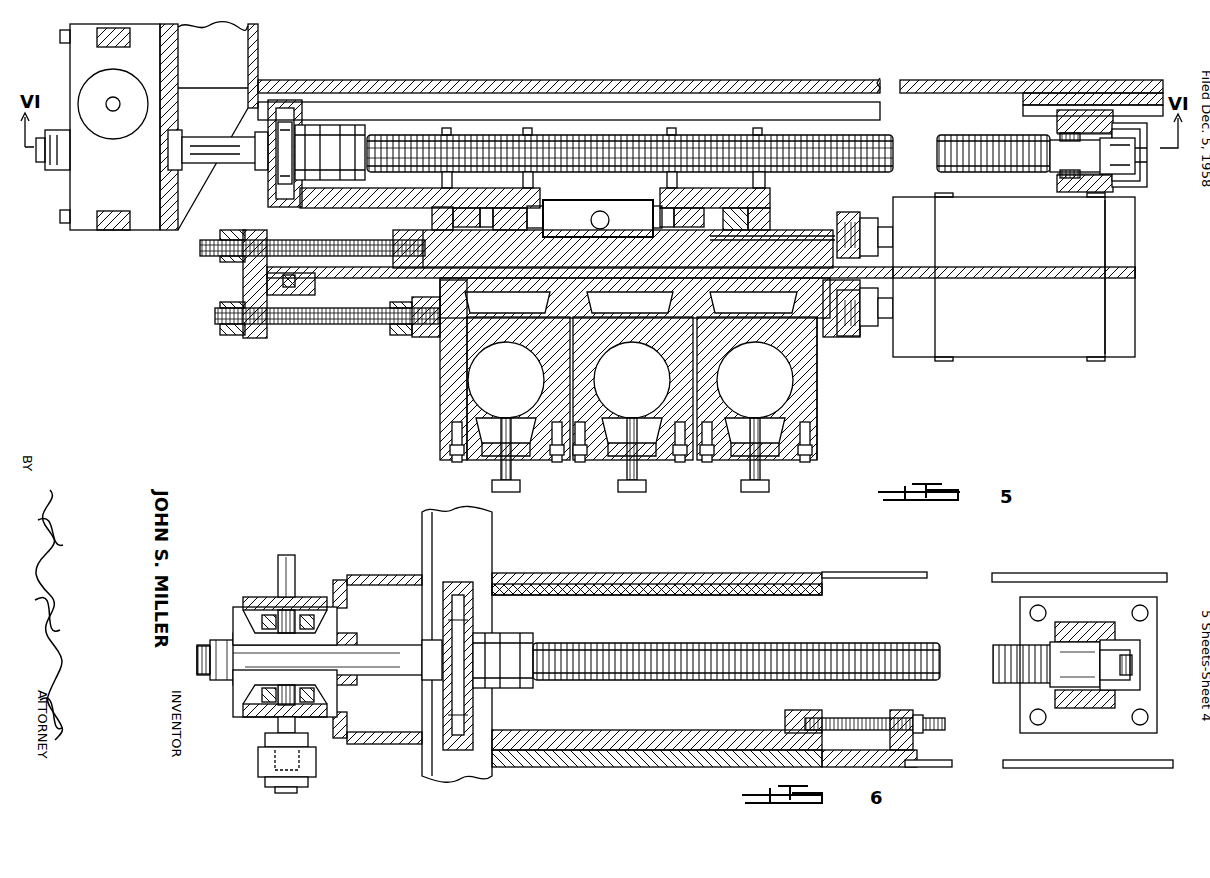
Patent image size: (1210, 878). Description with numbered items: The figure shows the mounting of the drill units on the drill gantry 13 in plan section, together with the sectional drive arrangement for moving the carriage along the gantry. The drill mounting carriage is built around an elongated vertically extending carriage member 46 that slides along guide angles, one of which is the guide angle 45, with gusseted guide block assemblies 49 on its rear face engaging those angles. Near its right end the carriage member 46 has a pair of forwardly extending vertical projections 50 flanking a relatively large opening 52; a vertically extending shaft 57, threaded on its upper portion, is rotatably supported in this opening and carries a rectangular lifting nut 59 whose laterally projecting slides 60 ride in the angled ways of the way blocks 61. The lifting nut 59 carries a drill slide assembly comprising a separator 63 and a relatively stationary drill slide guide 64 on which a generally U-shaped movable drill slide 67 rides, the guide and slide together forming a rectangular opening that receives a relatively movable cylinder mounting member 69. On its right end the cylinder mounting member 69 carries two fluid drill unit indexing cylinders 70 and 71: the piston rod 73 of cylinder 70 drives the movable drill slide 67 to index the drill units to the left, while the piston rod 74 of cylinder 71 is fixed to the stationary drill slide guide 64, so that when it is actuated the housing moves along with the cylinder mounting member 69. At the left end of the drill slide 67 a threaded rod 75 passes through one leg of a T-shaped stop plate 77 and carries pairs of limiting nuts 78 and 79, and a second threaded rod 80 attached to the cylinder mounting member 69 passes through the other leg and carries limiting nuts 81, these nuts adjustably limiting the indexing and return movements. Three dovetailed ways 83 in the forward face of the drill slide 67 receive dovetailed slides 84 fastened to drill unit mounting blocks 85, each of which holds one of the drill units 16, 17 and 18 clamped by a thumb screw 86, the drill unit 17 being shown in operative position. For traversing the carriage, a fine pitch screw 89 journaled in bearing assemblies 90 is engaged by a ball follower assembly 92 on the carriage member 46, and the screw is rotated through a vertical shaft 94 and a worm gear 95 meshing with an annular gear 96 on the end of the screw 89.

In FIG. 5, the drill gantry 13 is at (815, 86).
In FIG. 6, the drill gantry 13 is at (780, 576).
In FIG. 5, the drill unit 16 is at (518, 388).
In FIG. 5, the drill unit 17 is at (644, 388).
In FIG. 5, the drill unit 18 is at (767, 388).
In FIG. 5, the guide angle 45 is at (853, 120).
In FIG. 5, the carriage member 46 is at (330, 205).
In FIG. 5, the gusseted guide block assembly 49 is at (596, 132).
In FIG. 5, the vertical projection 50 is at (435, 215).
In FIG. 5, the opening 52 is at (560, 222).
In FIG. 5, the vertically extending shaft 57 is at (604, 211).
In FIG. 5, the rectangular lifting nut 59 is at (579, 231).
In FIG. 5, the slide 60 is at (508, 214).
In FIG. 5, the way block 61 is at (458, 212).
In FIG. 5, the separator 63 is at (712, 239).
In FIG. 5, the drill slide guide 64 is at (434, 340).
In FIG. 5, the drill slide 67 is at (826, 322).
In FIG. 5, the cylinder mounting member 69 is at (372, 279).
In FIG. 5, the fluid drill unit indexing cylinder 70 is at (1043, 348).
In FIG. 5, the fluid drill unit indexing cylinder 71 is at (1124, 241).
In FIG. 5, the piston rod 73 is at (887, 328).
In FIG. 5, the piston rod 74 is at (880, 232).
In FIG. 5, the threaded rod 75 is at (331, 325).
In FIG. 5, the T-shaped stop plate 77 is at (246, 286).
In FIG. 5, the limiting nut 78 is at (228, 336).
In FIG. 5, the limiting nut 79 is at (398, 336).
In FIG. 5, the threaded rod 80 is at (205, 248).
In FIG. 5, the limiting nut 81 is at (228, 230).
In FIG. 5, the dovetailed way 83 is at (447, 300).
In FIG. 5, the dovetailed slide 84 is at (812, 318).
In FIG. 5, the drill unit mounting block 85 is at (579, 428).
In FIG. 5, the thumb screw 86 is at (628, 493).
In FIG. 5, the fine pitch screw 89 is at (750, 138).
In FIG. 6, the fine pitch screw 89 is at (862, 648).
In FIG. 5, the bearing assembly 90 is at (1085, 112).
In FIG. 6, the bearing assembly 90 is at (320, 600).
In FIG. 5, the ball follower assembly 92 is at (340, 130).
In FIG. 6, the ball follower assembly 92 is at (510, 630).
In FIG. 6, the vertical shaft 94 is at (280, 567).
In FIG. 6, the worm gear 95 is at (290, 575).
In FIG. 6, the annular gear 96 is at (262, 716).